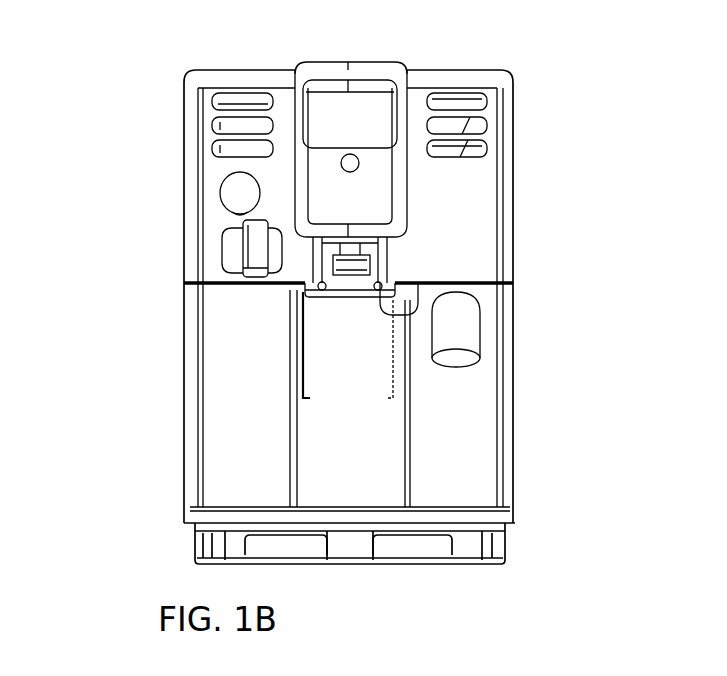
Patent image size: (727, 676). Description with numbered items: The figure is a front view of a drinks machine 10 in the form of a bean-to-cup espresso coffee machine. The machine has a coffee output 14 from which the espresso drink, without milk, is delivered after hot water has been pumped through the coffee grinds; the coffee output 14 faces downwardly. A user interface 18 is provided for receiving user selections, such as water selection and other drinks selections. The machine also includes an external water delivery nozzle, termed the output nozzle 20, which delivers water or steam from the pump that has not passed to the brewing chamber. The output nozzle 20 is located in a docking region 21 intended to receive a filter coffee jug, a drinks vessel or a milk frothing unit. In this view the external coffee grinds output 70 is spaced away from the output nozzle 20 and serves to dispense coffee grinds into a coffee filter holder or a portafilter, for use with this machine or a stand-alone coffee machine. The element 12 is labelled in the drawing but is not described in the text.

The drinks machine 10 is at (535, 289).
The front panel 12 is at (184, 242).
The coffee output 14 is at (415, 283).
The user interface 18 is at (527, 139).
The output nozzle 20 is at (247, 281).
The docking region 21 is at (253, 393).
The external coffee grinds output 70 is at (480, 338).